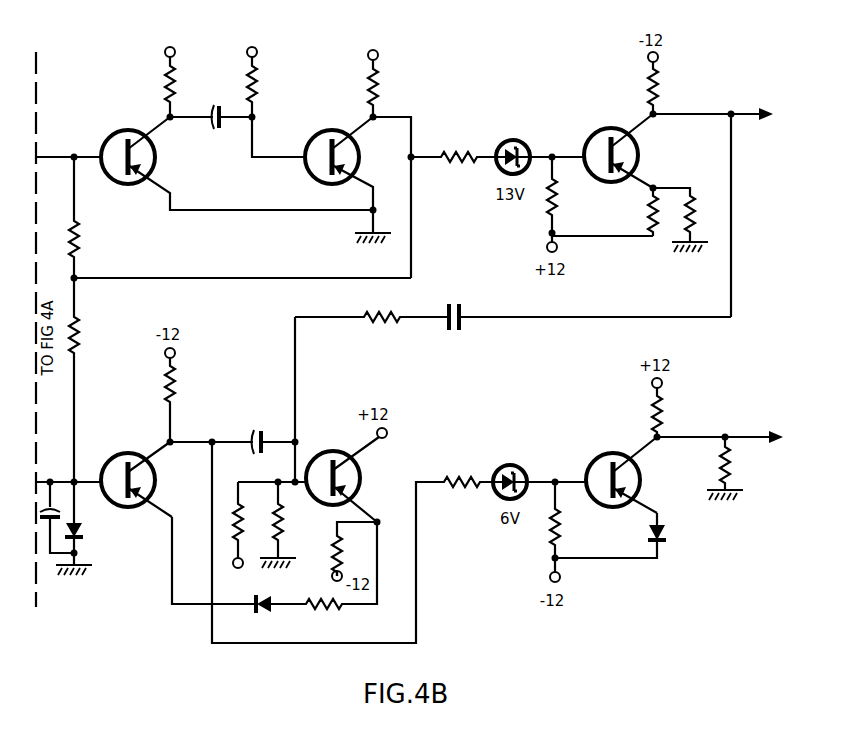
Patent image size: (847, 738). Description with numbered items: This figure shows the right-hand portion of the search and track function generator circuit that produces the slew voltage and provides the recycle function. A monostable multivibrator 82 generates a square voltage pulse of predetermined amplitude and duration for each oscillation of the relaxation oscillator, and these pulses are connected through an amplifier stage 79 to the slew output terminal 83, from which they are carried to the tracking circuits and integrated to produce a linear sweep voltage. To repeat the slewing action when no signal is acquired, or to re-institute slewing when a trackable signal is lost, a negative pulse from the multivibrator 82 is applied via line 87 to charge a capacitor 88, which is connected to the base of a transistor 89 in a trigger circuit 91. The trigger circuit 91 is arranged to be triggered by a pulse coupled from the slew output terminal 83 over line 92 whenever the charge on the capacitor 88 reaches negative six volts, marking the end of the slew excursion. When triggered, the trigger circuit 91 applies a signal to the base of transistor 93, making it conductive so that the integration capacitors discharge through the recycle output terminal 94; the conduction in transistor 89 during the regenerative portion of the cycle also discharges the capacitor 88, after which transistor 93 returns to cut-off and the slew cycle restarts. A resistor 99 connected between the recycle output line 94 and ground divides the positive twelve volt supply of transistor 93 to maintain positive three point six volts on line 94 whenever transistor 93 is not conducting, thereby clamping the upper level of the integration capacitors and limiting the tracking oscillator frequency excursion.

The amplifier stage 79 is at (593, 128).
The monostable multivibrator 82 is at (230, 184).
The output terminal 83 is at (736, 110).
The line 87 is at (76, 401).
The capacitor 88 is at (64, 511).
The transistor 89 is at (120, 507).
The trigger circuit 91 is at (272, 481).
The line 92 is at (504, 319).
The transistor 93 is at (599, 460).
The recycle output terminal 94 is at (737, 437).
The resistor 99 is at (722, 468).